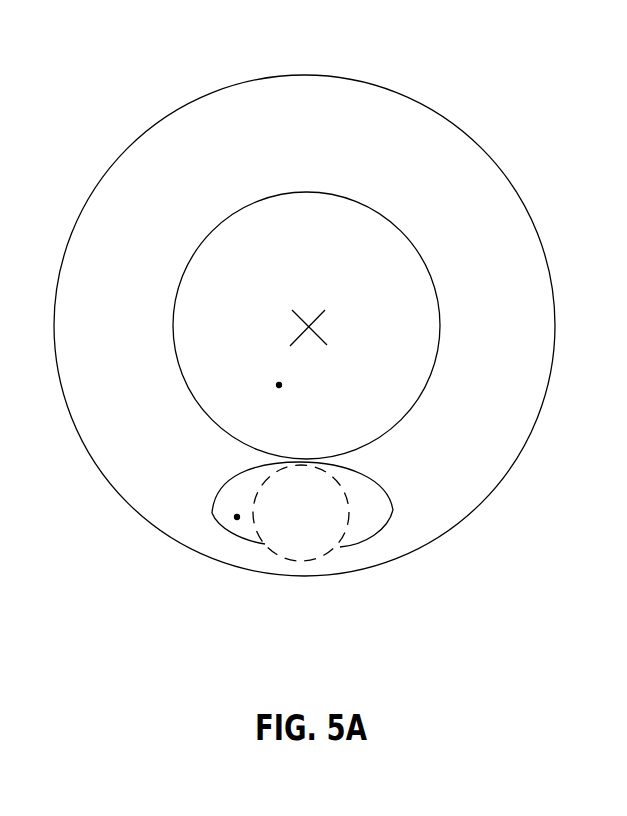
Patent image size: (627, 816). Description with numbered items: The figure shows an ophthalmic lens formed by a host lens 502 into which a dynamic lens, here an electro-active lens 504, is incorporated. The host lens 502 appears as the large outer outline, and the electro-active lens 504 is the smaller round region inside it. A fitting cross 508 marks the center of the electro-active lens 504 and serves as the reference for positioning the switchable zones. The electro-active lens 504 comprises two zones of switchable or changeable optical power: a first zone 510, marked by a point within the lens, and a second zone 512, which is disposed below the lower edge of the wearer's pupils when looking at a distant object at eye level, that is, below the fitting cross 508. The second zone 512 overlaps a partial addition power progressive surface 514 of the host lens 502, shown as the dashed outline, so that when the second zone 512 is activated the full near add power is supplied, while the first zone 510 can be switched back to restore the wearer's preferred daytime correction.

The host lens 502 is at (184, 106).
The electro-active lens 504 is at (396, 226).
The fitting cross 508 is at (319, 311).
The first zone 510 is at (277, 386).
The second zone 512 is at (237, 518).
The partial addition power progressive surface 514 is at (328, 550).